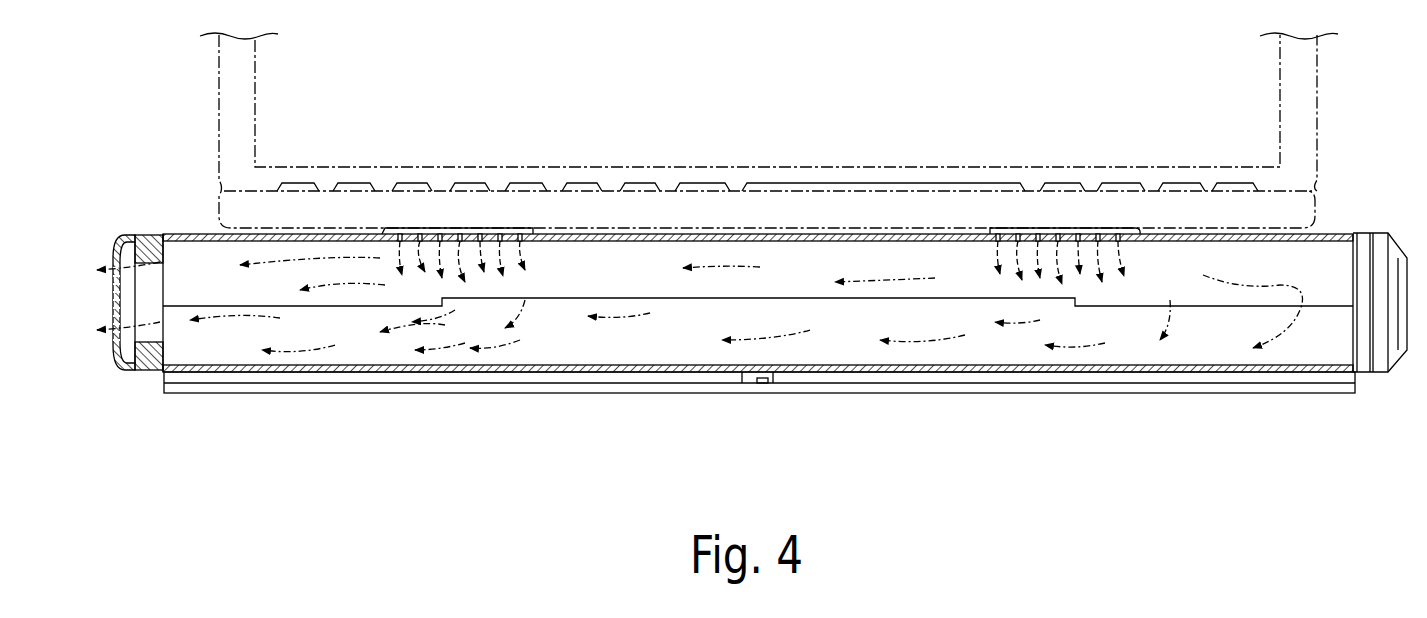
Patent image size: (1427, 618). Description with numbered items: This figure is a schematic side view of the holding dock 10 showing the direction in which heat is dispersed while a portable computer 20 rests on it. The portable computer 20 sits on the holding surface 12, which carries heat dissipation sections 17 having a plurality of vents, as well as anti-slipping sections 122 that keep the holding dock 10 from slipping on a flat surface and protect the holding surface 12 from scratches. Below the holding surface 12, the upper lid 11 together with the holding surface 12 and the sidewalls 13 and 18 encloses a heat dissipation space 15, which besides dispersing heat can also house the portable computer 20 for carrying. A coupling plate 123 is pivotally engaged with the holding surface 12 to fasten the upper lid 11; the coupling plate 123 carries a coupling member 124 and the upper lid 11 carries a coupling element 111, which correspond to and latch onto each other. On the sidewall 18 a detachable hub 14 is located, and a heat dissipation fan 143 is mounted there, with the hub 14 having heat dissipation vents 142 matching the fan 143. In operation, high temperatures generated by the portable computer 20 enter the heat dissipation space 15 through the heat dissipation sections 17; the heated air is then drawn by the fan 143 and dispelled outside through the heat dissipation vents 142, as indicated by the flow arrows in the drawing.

The holding dock 10 is at (735, 302).
The upper lid 11 is at (265, 372).
The coupling element 111 is at (768, 378).
The holding surface 12 is at (758, 194).
The anti-slipping sections 122 is at (745, 232).
The coupling plate 123 is at (374, 388).
The coupling member 124 is at (810, 429).
The sidewall 13 is at (1378, 246).
The detachable hub 14 is at (102, 302).
The heat dissipation vents 142 is at (118, 330).
The heat dissipation fan 143 is at (148, 272).
The heat dissipation space 15 is at (568, 340).
The heat dissipation sections 17 is at (517, 232).
The sidewall 18 is at (150, 235).
The portable computer 20 is at (1318, 138).